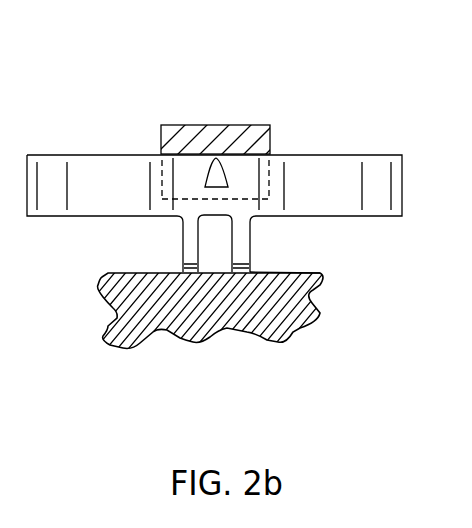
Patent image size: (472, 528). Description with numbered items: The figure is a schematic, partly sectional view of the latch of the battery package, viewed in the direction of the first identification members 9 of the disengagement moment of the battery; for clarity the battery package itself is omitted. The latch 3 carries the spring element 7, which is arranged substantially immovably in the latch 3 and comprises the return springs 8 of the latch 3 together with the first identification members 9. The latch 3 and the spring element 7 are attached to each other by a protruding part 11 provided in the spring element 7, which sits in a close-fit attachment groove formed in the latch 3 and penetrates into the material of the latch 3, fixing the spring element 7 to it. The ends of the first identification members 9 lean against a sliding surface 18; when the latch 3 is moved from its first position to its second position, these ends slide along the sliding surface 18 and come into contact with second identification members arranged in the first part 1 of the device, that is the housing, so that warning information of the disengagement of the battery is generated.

The first part of the device 1 is at (120, 322).
The latch 3 is at (233, 131).
The spring element 7 is at (107, 126).
The return springs 8 is at (314, 162).
The first identification members 9 is at (250, 227).
The protruding part 11 is at (222, 174).
The sliding surface 18 is at (277, 272).